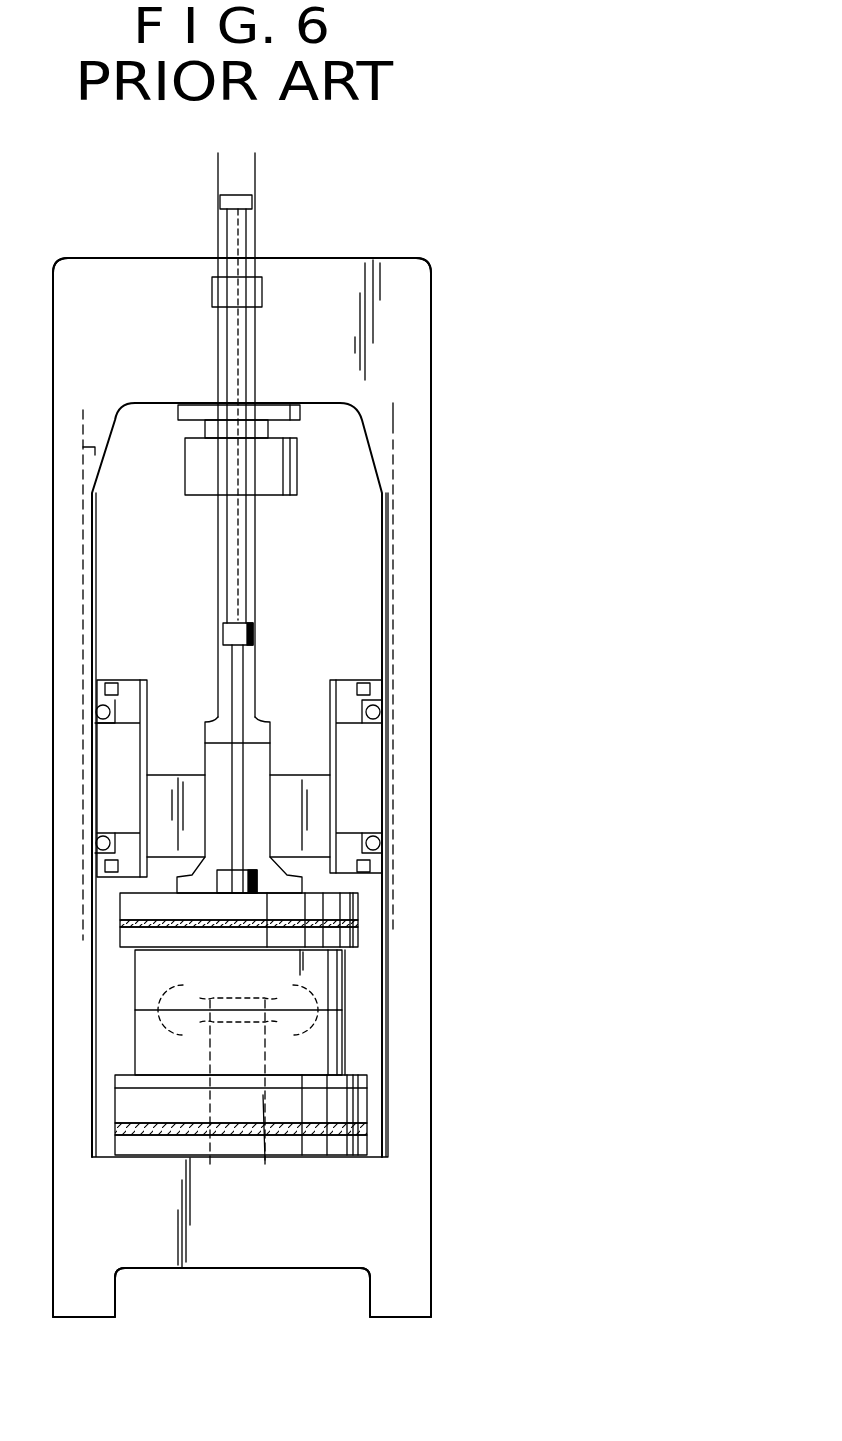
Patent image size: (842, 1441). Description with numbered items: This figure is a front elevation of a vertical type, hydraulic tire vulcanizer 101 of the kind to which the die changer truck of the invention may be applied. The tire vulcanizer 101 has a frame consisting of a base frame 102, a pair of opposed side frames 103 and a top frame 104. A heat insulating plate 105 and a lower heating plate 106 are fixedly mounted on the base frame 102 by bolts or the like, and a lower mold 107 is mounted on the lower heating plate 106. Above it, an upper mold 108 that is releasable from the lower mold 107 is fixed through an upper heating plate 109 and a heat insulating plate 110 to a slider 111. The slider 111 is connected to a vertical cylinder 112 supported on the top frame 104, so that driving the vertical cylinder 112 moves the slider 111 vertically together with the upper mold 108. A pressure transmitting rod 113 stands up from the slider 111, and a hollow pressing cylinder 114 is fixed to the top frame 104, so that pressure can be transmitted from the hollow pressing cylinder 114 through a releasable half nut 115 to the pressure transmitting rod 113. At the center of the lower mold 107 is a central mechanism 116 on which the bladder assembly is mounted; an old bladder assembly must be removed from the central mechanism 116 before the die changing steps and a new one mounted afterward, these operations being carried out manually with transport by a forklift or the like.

The tire vulcanizer 101 is at (437, 242).
The base frame 102 is at (262, 1235).
The side frames 103 is at (92, 1056).
The top frame 104 is at (150, 332).
The heat insulating plate 105 is at (362, 1128).
The lower heating plate 106 is at (362, 1095).
The lower mold 107 is at (258, 1056).
The upper mold 108 is at (264, 981).
The upper heating plate 109 is at (358, 932).
The heat insulating plate 110 is at (358, 923).
The slider 111 is at (362, 755).
The vertical cylinder 112 is at (247, 325).
The pressure transmitting rod 113 is at (255, 655).
The hollow pressing cylinder 114 is at (300, 410).
The releasable half nut 115 is at (297, 480).
The central mechanism 116 is at (267, 1100).